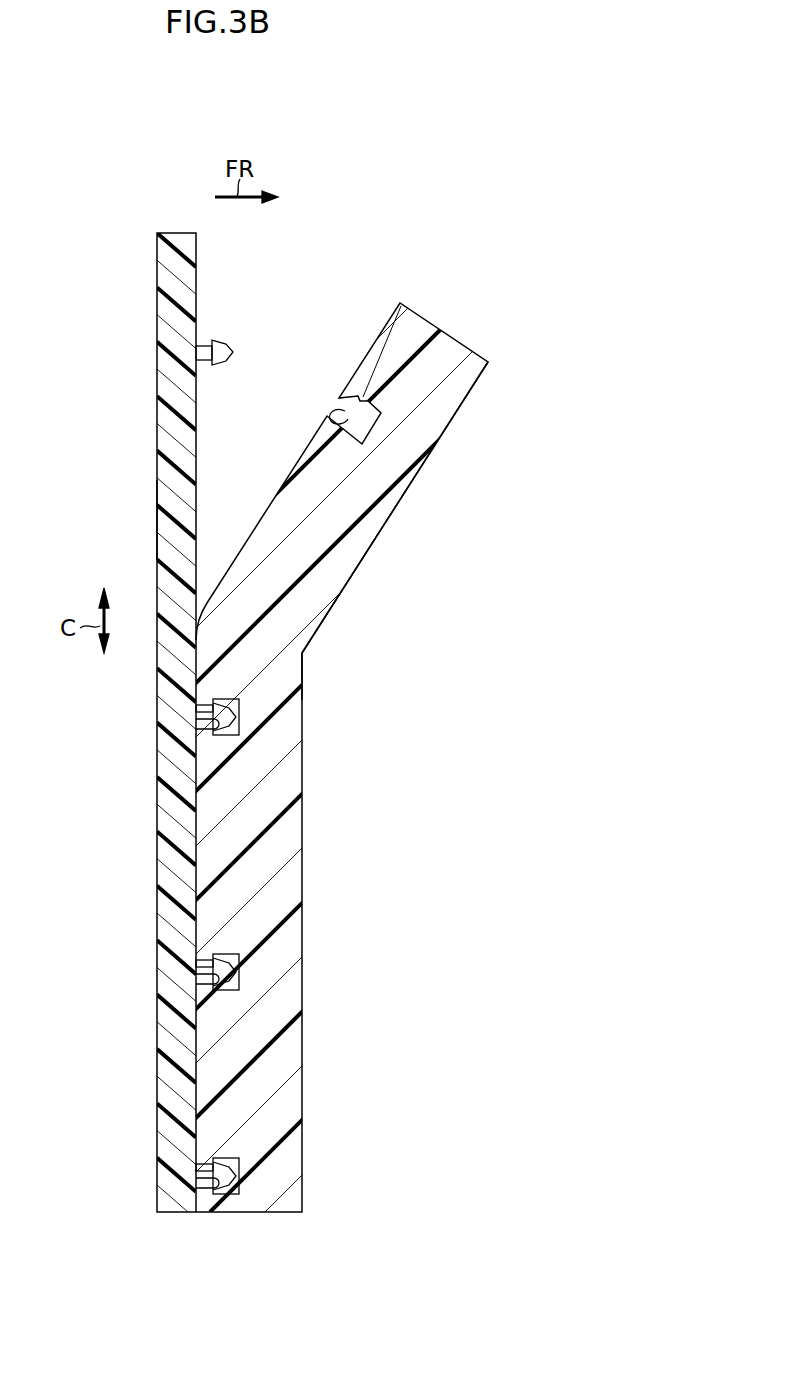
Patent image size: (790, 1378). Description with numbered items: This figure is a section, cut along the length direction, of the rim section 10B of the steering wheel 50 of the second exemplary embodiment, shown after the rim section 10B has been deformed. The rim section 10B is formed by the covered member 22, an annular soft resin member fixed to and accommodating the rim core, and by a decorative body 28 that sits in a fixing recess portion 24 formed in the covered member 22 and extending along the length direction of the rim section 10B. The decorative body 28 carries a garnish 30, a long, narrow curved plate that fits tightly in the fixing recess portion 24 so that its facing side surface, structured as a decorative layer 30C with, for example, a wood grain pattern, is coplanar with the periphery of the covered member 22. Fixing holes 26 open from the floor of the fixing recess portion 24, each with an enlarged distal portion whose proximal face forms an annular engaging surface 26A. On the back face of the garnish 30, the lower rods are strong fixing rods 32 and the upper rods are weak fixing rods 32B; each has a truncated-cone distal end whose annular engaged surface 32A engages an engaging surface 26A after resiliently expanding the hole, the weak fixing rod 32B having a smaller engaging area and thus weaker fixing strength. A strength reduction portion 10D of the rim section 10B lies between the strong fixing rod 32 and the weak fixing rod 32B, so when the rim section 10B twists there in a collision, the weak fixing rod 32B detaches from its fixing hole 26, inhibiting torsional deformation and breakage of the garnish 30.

The rim section 10B is at (130, 206).
The steering wheel 50 is at (395, 682).
The garnish 30 is at (156, 281).
The decorative body 28 is at (123, 726).
The decorative layer 30C is at (156, 520).
The fixing rod 32 is at (240, 971).
The engaged surface 32A is at (211, 346).
The weak fixing rod 32B is at (235, 352).
The fixing hole 26 is at (337, 397).
The engaging surface 26A is at (338, 418).
The fixing recess portion 24 is at (378, 340).
The covered member 22 is at (366, 556).
The strength reduction portion 10D is at (305, 652).